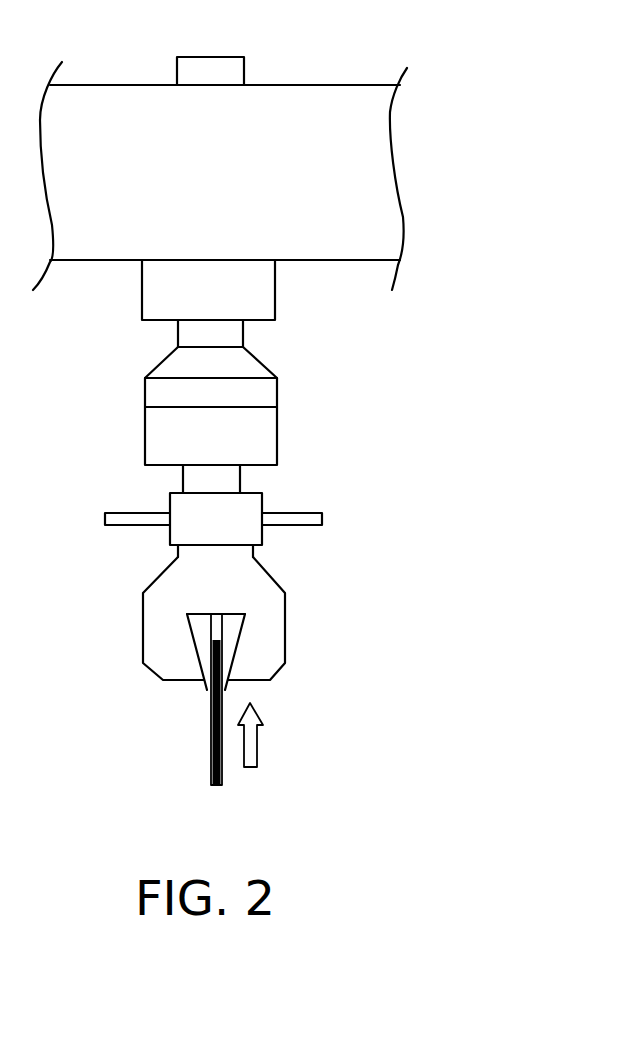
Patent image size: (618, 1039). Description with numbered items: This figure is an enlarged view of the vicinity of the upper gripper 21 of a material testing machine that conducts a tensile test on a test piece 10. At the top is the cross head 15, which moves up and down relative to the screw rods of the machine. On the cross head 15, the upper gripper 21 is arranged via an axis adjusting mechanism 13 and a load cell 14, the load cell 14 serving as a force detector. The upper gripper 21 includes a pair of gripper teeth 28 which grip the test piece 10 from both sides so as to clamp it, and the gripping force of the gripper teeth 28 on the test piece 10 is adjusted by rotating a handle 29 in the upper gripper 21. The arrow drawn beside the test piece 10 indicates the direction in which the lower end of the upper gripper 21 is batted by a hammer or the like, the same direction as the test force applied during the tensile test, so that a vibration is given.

The test piece 10 is at (212, 755).
The axis adjusting mechanism 13 is at (250, 292).
The load cell 14 is at (257, 442).
The cross head 15 is at (323, 118).
The upper gripper 21 is at (167, 623).
The gripper teeth 28 is at (203, 640).
The handle 29 is at (110, 517).